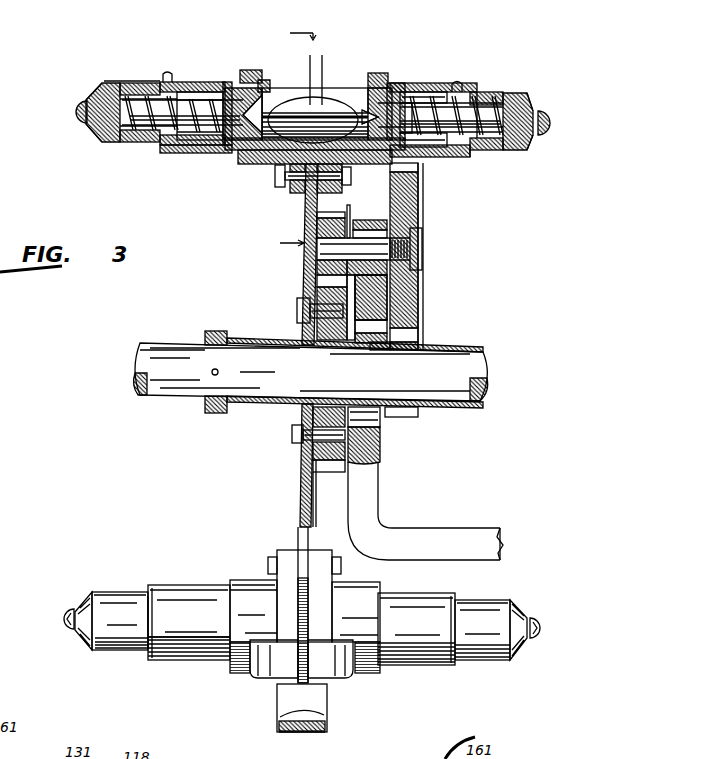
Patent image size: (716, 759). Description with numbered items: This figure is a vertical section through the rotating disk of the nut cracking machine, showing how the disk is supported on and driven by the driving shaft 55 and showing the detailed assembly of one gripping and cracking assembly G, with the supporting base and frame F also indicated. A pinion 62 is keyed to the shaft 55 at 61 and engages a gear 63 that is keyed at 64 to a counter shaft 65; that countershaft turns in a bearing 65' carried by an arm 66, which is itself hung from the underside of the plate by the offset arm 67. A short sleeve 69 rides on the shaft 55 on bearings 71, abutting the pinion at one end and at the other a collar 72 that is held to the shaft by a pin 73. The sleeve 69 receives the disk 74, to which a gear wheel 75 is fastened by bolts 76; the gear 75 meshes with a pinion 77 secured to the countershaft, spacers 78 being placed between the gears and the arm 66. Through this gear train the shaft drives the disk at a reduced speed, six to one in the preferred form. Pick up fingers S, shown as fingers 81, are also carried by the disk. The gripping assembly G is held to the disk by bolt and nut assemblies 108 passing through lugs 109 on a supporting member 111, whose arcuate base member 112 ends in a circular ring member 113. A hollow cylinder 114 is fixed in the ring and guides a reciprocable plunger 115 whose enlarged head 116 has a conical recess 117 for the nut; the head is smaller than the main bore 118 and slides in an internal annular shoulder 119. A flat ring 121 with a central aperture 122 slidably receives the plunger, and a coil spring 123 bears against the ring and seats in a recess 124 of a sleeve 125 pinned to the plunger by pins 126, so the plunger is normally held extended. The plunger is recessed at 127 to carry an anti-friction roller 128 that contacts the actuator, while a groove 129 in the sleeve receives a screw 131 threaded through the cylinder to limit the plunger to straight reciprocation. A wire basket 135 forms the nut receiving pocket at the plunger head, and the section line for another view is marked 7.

The shaft 55 is at (485, 368).
The key 61 is at (398, 400).
The pinion 62 is at (416, 416).
The gear 63 is at (423, 192).
The key 64 is at (412, 264).
The counter shaft 65 is at (367, 265).
The bearing 65' is at (407, 293).
The arm 66 is at (378, 459).
The offset arm 67 is at (425, 535).
The sleeve 69 is at (245, 403).
The bearings 71 is at (340, 347).
The collar 72 is at (205, 412).
The pin 73 is at (212, 371).
The disk 74 is at (300, 495).
The gear wheel 75 is at (324, 461).
The bolts 76 is at (297, 309).
The pinion 77 is at (307, 223).
The spacers 78 is at (348, 236).
The pick up fingers 81 is at (326, 716).
The bolt and nut assemblies 108 is at (276, 180).
The lugs 109 is at (307, 202).
The supporting members 111 is at (242, 61).
The base members 112 is at (240, 164).
The ring members 113 is at (262, 78).
The hollow cylinder 114 is at (190, 82).
The plunger 115 is at (138, 105).
The head 116 is at (363, 110).
The conical recess 117 is at (322, 112).
The main bore 118 is at (208, 92).
The internal annular shoulder 119 is at (243, 72).
The flat rings 121 is at (200, 152).
The apertures 122 is at (268, 108).
The coil springs 123 is at (135, 145).
The recess 124 is at (122, 145).
The sleeve 125 is at (100, 138).
The pins 126 is at (107, 112).
The recess 127 is at (100, 118).
The anti-friction rollers 128 is at (78, 108).
The groove 129 is at (110, 82).
The screw 131 is at (166, 72).
The wire basket 135 is at (318, 85).
The section line 7 is at (292, 138).
The gripping and cracking assemblies G is at (418, 71).
The supporting base and frame F is at (508, 525).
The pick up fingers S is at (293, 730).